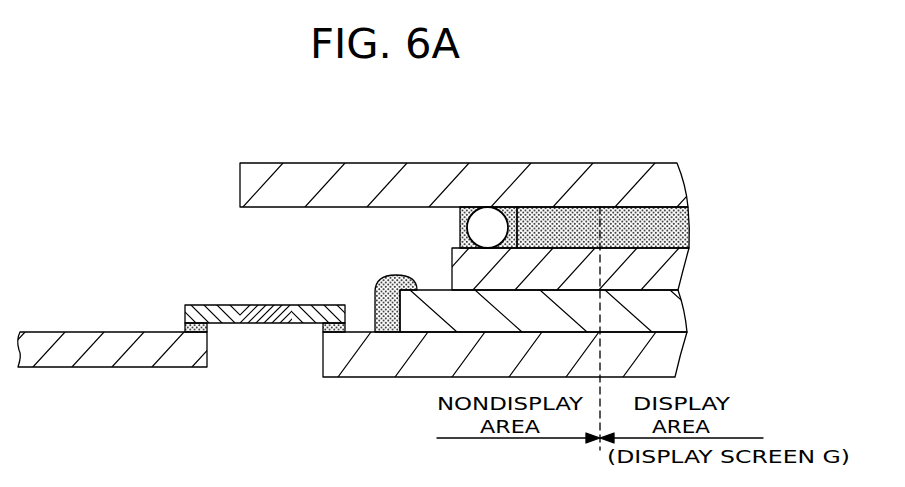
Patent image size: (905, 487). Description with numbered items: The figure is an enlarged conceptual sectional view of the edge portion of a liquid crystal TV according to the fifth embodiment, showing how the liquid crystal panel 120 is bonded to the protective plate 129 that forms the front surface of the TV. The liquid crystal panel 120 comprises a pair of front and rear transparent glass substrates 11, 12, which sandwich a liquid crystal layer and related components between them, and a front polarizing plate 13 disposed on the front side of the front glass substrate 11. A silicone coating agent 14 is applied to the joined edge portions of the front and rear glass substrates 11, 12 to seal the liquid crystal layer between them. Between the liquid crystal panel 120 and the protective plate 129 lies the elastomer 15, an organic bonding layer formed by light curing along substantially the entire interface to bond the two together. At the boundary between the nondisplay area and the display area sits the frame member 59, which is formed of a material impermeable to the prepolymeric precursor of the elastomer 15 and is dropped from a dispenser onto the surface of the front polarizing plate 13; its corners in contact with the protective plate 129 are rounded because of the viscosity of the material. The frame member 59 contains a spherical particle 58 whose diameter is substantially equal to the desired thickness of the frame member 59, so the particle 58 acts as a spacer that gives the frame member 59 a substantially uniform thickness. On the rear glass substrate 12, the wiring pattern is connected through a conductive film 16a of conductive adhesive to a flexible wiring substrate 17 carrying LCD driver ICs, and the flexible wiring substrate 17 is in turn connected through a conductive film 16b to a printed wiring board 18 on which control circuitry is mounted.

The protective plate 129 is at (660, 190).
The elastomer 15 is at (656, 231).
The frame member 59 is at (461, 206).
The particle 58 is at (492, 220).
The liquid crystal panel 120 is at (545, 312).
The front polarizing plate 13 is at (660, 276).
The front glass substrate 11 is at (657, 318).
The rear glass substrate 12 is at (514, 354).
The silicone coating agent 14 is at (390, 282).
The flexible wiring substrate 17 is at (258, 304).
The conductive film 16a is at (322, 331).
The conductive film 16b is at (185, 326).
The printed wiring board 18 is at (135, 368).